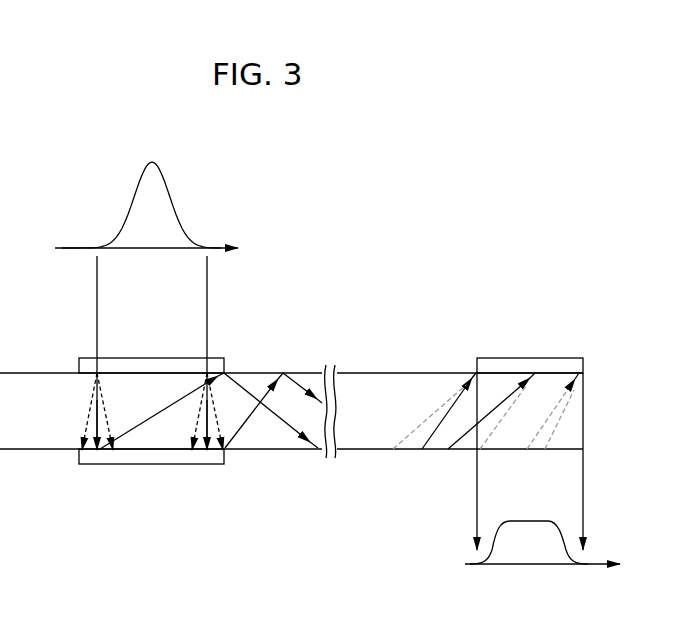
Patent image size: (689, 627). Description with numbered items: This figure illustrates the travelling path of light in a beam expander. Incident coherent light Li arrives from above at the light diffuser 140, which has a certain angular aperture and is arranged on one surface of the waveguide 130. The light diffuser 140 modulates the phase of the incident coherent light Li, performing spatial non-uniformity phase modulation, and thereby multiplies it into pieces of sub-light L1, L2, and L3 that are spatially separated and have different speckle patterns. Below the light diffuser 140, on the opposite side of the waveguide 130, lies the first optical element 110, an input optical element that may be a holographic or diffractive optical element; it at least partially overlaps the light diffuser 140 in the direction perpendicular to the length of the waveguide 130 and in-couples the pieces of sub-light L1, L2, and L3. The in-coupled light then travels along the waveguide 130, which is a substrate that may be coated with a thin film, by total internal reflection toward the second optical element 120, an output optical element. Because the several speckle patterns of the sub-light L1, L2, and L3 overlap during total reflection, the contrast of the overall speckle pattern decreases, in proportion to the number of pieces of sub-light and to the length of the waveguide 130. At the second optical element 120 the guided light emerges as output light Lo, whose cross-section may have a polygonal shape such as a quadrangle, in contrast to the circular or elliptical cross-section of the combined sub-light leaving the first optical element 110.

The first optical element 110 is at (197, 465).
The second optical element 120 is at (530, 357).
The waveguide 130 is at (290, 450).
The light diffuser 140 is at (155, 357).
The incident coherent light Li is at (97, 308).
The sub-light L1 is at (82, 421).
The sub-light L2 is at (92, 448).
The sub-light L3 is at (100, 440).
The light incident on the second optical element Lo is at (477, 503).